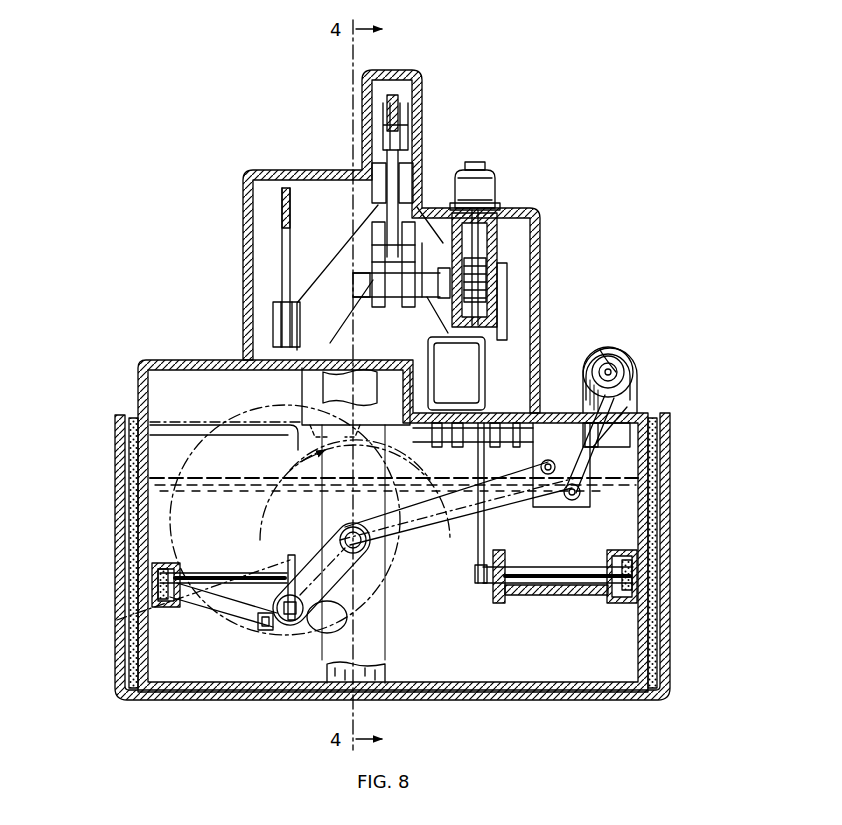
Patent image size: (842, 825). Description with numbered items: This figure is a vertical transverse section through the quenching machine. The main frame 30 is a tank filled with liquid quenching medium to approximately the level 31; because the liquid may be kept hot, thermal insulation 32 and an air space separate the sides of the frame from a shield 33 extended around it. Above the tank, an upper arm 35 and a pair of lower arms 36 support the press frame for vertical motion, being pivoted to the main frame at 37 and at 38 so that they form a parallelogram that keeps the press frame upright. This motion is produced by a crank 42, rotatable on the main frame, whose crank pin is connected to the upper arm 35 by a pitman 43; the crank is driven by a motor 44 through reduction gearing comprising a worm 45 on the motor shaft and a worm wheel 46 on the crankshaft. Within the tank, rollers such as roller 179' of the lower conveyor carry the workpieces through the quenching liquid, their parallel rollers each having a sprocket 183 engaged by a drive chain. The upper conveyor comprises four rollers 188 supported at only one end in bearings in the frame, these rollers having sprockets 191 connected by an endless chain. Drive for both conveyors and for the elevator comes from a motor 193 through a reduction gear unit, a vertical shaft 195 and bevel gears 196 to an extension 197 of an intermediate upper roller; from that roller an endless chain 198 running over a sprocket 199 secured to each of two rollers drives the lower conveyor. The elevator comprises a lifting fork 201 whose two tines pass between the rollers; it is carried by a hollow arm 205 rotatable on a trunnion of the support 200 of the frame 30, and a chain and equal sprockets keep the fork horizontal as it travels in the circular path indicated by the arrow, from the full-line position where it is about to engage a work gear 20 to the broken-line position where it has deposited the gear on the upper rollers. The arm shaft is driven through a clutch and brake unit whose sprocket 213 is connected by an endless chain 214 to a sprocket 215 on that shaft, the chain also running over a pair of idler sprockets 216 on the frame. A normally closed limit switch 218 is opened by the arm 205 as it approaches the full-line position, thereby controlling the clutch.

The work gear 20 is at (195, 563).
The main frame 30 is at (140, 522).
The liquid level 31 is at (207, 476).
The thermal insulation 32 is at (133, 450).
The shield 33 is at (116, 478).
The upper arm 35 is at (392, 96).
The lower arms 36 is at (250, 268).
The pivot of upper arm 37 is at (406, 114).
The pivot of lower arms 38 is at (507, 302).
The crank 42 is at (404, 272).
The pitman 43 is at (393, 178).
The motor 44 is at (480, 182).
The worm 45 is at (500, 228).
The worm wheel 46 is at (498, 278).
The roller 179' is at (560, 588).
The sprocket 183 is at (162, 610).
The rollers 188 is at (430, 392).
The sprockets 191 is at (437, 426).
The motor 193 is at (605, 347).
The vertical shaft 195 is at (613, 402).
The bevel gears 196 is at (628, 445).
The extension 197 is at (568, 352).
The endless chain 198 is at (483, 530).
The sprocket 199 is at (462, 428).
The support 200 is at (378, 368).
The lifting fork 201 is at (238, 610).
The hollow arm 205 is at (365, 566).
The sprocket 213 is at (617, 370).
The endless chain 214 is at (590, 508).
The sprocket 215 is at (343, 527).
The idler sprockets 216 is at (542, 465).
The limit switch 218 is at (266, 631).